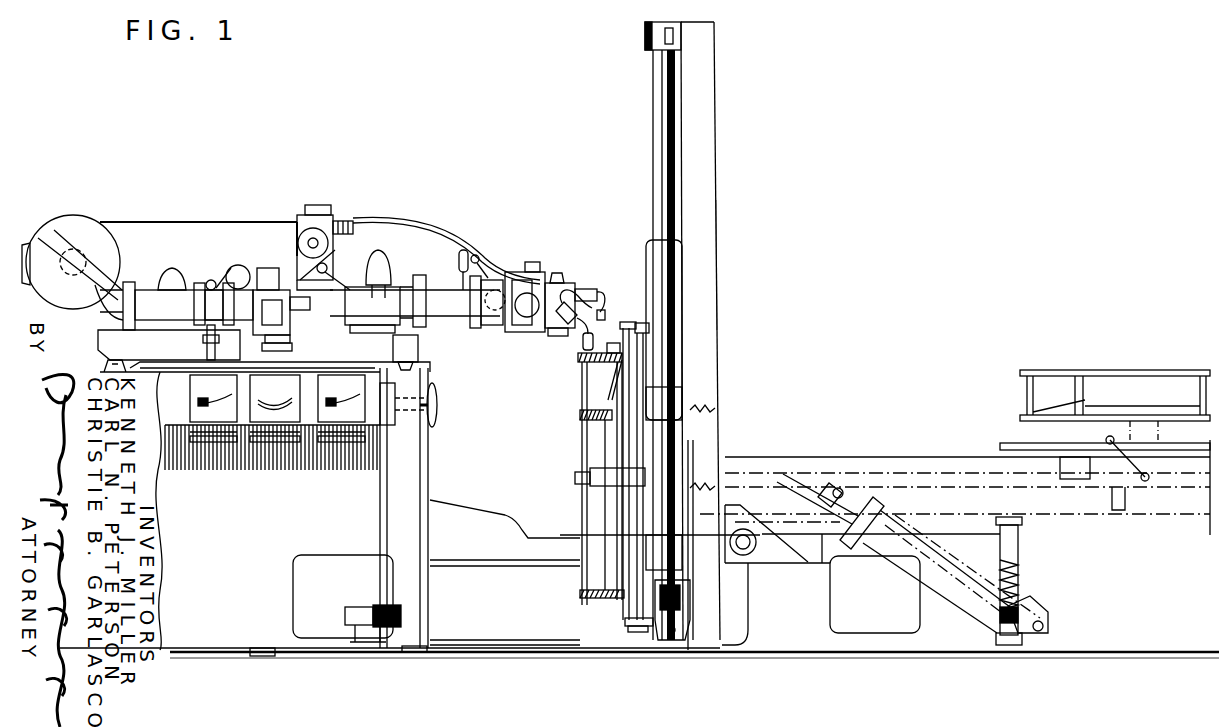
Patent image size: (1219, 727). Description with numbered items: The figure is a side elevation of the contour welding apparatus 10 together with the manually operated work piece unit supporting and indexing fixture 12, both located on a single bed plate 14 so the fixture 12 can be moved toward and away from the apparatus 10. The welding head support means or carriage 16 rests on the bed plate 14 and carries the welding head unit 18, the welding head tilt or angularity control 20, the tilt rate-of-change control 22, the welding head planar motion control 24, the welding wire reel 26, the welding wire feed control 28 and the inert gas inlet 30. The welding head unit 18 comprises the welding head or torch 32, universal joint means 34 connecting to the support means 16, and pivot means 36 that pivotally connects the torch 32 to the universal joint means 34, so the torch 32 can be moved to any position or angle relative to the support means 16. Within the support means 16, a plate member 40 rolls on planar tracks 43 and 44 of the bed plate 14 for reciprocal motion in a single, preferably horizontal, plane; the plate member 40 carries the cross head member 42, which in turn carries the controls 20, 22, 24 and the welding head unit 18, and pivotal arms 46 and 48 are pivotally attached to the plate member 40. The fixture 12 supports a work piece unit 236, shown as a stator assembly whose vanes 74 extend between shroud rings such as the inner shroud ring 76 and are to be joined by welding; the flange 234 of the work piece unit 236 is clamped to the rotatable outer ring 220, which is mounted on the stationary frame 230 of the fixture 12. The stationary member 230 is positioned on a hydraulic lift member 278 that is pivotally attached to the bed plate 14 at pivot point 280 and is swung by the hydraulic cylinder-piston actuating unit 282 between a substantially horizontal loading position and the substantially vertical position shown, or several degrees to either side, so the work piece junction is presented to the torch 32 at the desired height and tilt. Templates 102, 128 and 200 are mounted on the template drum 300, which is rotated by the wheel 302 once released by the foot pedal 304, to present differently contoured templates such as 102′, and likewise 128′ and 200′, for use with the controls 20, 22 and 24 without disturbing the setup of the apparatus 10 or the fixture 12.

The contour welding apparatus 10 is at (386, 192).
The work piece unit supporting and indexing fixture 12 is at (758, 143).
The bed plate 14 is at (726, 645).
The welding head support means 16 is at (429, 321).
The welding head unit 18 is at (523, 336).
The welding head tilt or angularity control 20 is at (372, 300).
The welding head tilt rate-of-change control 22 is at (209, 284).
The welding head planar motion control 24 is at (272, 268).
The welding wire reel 26 is at (72, 230).
The welding wire feed control 28 is at (332, 206).
The inert gas inlet 30 is at (548, 284).
The welding head or torch 32 is at (600, 286).
The universal joint means 34 is at (529, 262).
The pivot means 36 is at (585, 309).
The plate member 40 is at (98, 340).
The cross head member 42 is at (444, 288).
The planar track 43 is at (104, 364).
The planar track 44 is at (420, 362).
The pivotal arm 46 is at (175, 266).
The pivotal arm 48 is at (376, 262).
The vanes 74 is at (596, 381).
The inner shroud ring 76 is at (600, 425).
The template 102 is at (341, 398).
The differently contoured template 102' is at (342, 461).
The template 128 is at (213, 398).
The gauge lead 128' is at (212, 461).
The template 200 is at (275, 398).
The gauge lead 200' is at (275, 461).
The outer ring 220 is at (626, 630).
The stationary frame 230 is at (656, 642).
The flange 234 is at (612, 602).
The work piece unit 236 is at (1115, 372).
The hydraulic lift member 278 is at (708, 263).
The pivot point 280 is at (750, 555).
The hydraulic cylinder-piston actuating unit 282 is at (973, 588).
The template drum 300 is at (166, 368).
The wheel 302 is at (436, 426).
The foot pedal 304 is at (385, 630).